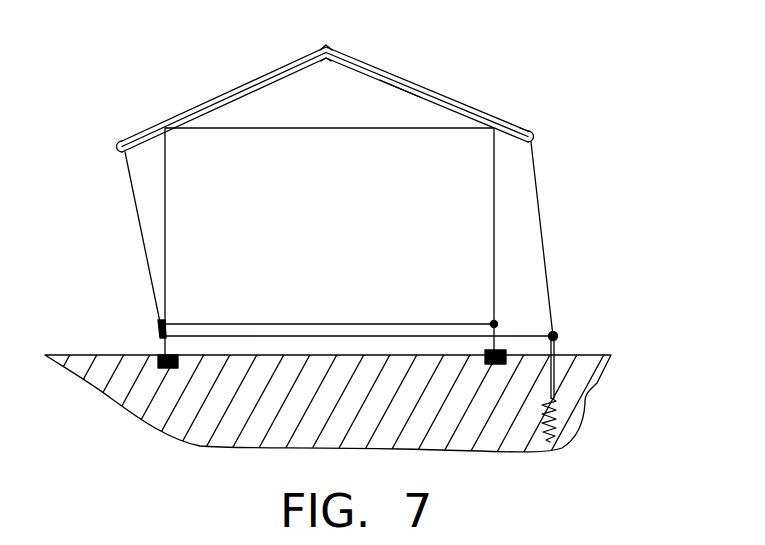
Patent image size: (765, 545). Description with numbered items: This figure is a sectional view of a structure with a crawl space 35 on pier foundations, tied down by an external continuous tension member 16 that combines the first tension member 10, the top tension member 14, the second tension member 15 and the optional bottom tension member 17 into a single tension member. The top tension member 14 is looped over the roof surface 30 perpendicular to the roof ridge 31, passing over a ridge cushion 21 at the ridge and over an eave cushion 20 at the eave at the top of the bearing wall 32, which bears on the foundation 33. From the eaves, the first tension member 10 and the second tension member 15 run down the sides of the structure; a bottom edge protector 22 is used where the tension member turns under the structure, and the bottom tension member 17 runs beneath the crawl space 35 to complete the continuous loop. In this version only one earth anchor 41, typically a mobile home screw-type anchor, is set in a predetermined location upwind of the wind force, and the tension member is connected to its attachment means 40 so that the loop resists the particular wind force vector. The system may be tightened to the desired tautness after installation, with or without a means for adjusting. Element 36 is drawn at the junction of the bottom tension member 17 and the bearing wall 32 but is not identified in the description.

The first tension member 10 is at (543, 247).
The top tension member 14 is at (157, 118).
The second tension member 15 is at (135, 203).
The external continuous tension member 16 is at (208, 98).
The bottom tension member 17 is at (300, 338).
The eave cushion 20 is at (519, 128).
The ridge cushion 21 is at (326, 46).
The bottom edge protector 22 is at (156, 325).
The roof surface 30 is at (405, 91).
The roof ridge 31 is at (329, 64).
The bearing wall 32 is at (167, 245).
The foundation 33 is at (484, 365).
The crawl space 35 is at (182, 343).
The junction point 36 is at (496, 324).
The attachment means 40 is at (556, 332).
The earth anchor means 41 is at (586, 395).